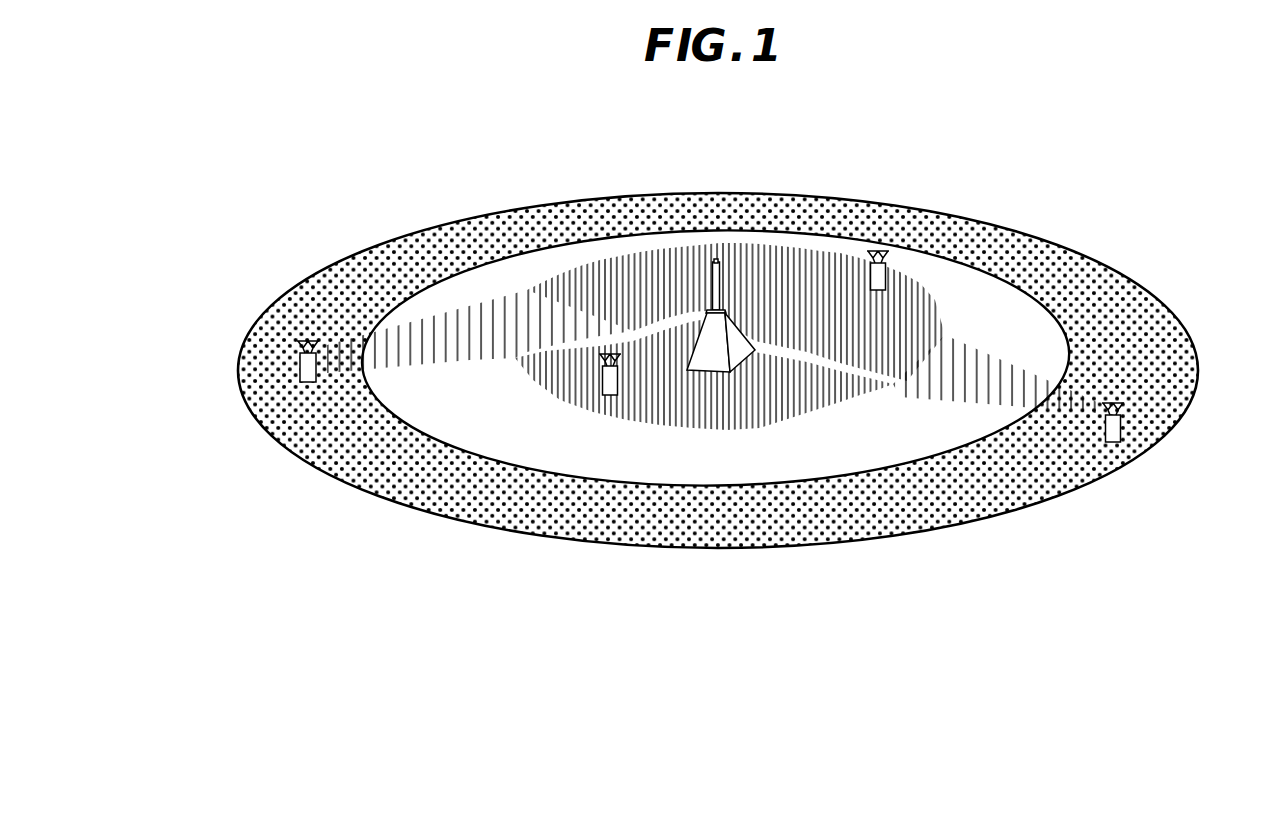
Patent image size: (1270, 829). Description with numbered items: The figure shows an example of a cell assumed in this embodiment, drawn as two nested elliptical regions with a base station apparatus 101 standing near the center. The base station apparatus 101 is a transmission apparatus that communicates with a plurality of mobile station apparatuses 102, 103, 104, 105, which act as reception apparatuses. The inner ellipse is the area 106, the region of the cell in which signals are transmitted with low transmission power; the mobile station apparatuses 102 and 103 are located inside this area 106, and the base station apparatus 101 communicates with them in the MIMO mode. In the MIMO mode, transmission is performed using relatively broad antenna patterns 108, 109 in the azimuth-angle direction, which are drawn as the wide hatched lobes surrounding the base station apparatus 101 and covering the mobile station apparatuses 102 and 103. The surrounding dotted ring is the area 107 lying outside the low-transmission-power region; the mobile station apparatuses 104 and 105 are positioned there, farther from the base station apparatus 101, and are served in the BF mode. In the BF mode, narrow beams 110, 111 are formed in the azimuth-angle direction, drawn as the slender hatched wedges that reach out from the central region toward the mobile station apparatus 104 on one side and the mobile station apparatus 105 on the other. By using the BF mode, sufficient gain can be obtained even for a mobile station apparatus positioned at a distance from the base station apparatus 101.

The base station apparatus 101 is at (717, 262).
The mobile station apparatus 102 is at (612, 397).
The mobile station apparatus 103 is at (886, 275).
The mobile station apparatus 104 is at (300, 365).
The mobile station apparatus 105 is at (1120, 430).
The area 106 is at (730, 379).
The area 107 is at (1115, 295).
The antenna pattern 108 is at (708, 417).
The antenna pattern 109 is at (797, 273).
The narrow beam 110 is at (468, 362).
The narrow beam 111 is at (952, 393).